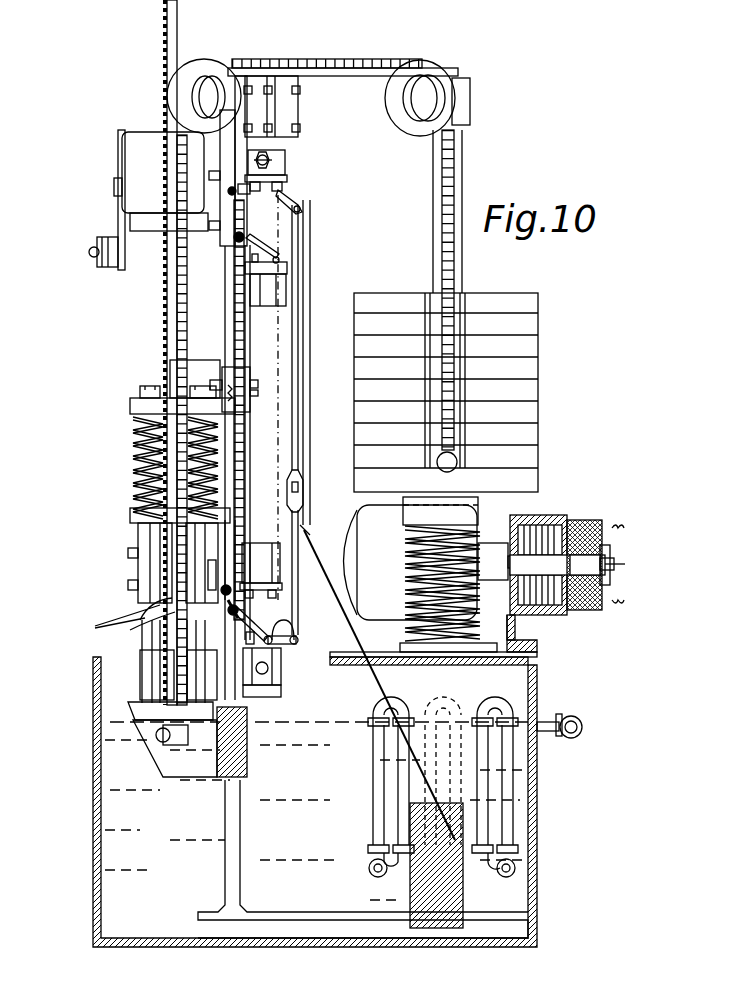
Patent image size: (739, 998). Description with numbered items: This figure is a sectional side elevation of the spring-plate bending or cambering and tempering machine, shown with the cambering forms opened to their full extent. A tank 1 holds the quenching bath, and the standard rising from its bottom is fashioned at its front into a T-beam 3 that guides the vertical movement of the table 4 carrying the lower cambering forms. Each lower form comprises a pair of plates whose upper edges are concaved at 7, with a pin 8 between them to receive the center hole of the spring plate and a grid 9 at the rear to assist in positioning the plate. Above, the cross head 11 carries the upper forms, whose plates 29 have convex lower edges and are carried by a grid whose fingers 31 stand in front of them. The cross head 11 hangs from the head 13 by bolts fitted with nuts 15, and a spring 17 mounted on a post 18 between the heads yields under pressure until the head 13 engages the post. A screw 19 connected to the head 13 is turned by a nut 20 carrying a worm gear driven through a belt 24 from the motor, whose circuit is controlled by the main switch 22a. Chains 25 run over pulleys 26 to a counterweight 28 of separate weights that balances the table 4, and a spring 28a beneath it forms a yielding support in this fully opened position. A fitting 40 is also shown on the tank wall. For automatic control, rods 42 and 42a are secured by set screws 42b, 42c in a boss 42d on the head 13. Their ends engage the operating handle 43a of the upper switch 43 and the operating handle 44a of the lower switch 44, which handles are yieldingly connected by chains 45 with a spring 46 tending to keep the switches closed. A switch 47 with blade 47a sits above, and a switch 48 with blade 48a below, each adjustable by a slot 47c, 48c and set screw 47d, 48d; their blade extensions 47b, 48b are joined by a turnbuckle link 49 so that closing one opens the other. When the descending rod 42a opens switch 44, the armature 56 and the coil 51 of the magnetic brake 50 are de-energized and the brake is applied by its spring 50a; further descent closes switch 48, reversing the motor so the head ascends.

The tank 1 is at (536, 815).
The T-beam 3 is at (224, 812).
The table 4 is at (190, 742).
The concaved upper edge 7 is at (165, 692).
The pin 8 is at (145, 630).
The grid 9 is at (147, 623).
The cross head 11 is at (138, 515).
The head 13 is at (198, 370).
The nuts 15 is at (148, 386).
The spring 17 is at (135, 440).
The post 18 is at (133, 466).
The screw 19 is at (184, 30).
The nut 20 is at (161, 200).
The main switch 22a is at (110, 270).
The belt 24 is at (311, 250).
The chains 25 is at (105, 629).
The pulleys 26 is at (215, 62).
The counterweight 28 is at (530, 328).
The spring 28a is at (405, 536).
The plates 29 is at (150, 603).
The fingers 31 is at (128, 570).
The valve 40 is at (552, 715).
The upper rod 42 is at (232, 275).
The lower rod 42a is at (224, 530).
The set screw 42b is at (210, 385).
The set screw 42c is at (258, 384).
The boss 42d is at (258, 393).
The upper switch 43 is at (240, 252).
The pawl arm 43a is at (258, 245).
The lower switch 44 is at (258, 555).
The pivot pin 44a is at (230, 606).
The chains 45 is at (242, 330).
The spring 46 is at (246, 378).
The switch 47 is at (284, 160).
The blade 47a is at (281, 190).
The extension 47b is at (300, 200).
The slot 47c is at (268, 150).
The set screw 47d is at (272, 165).
The switch 48 is at (258, 685).
The blade 48a is at (256, 625).
The extension 48b is at (296, 636).
The slot 48c is at (280, 690).
The set screw 48d is at (270, 668).
The link 49 is at (300, 308).
The magnetic brake 50 is at (612, 548).
The brake spring 50a is at (629, 565).
The brake magnet coil 51 is at (582, 525).
The motor armature 56 is at (431, 574).